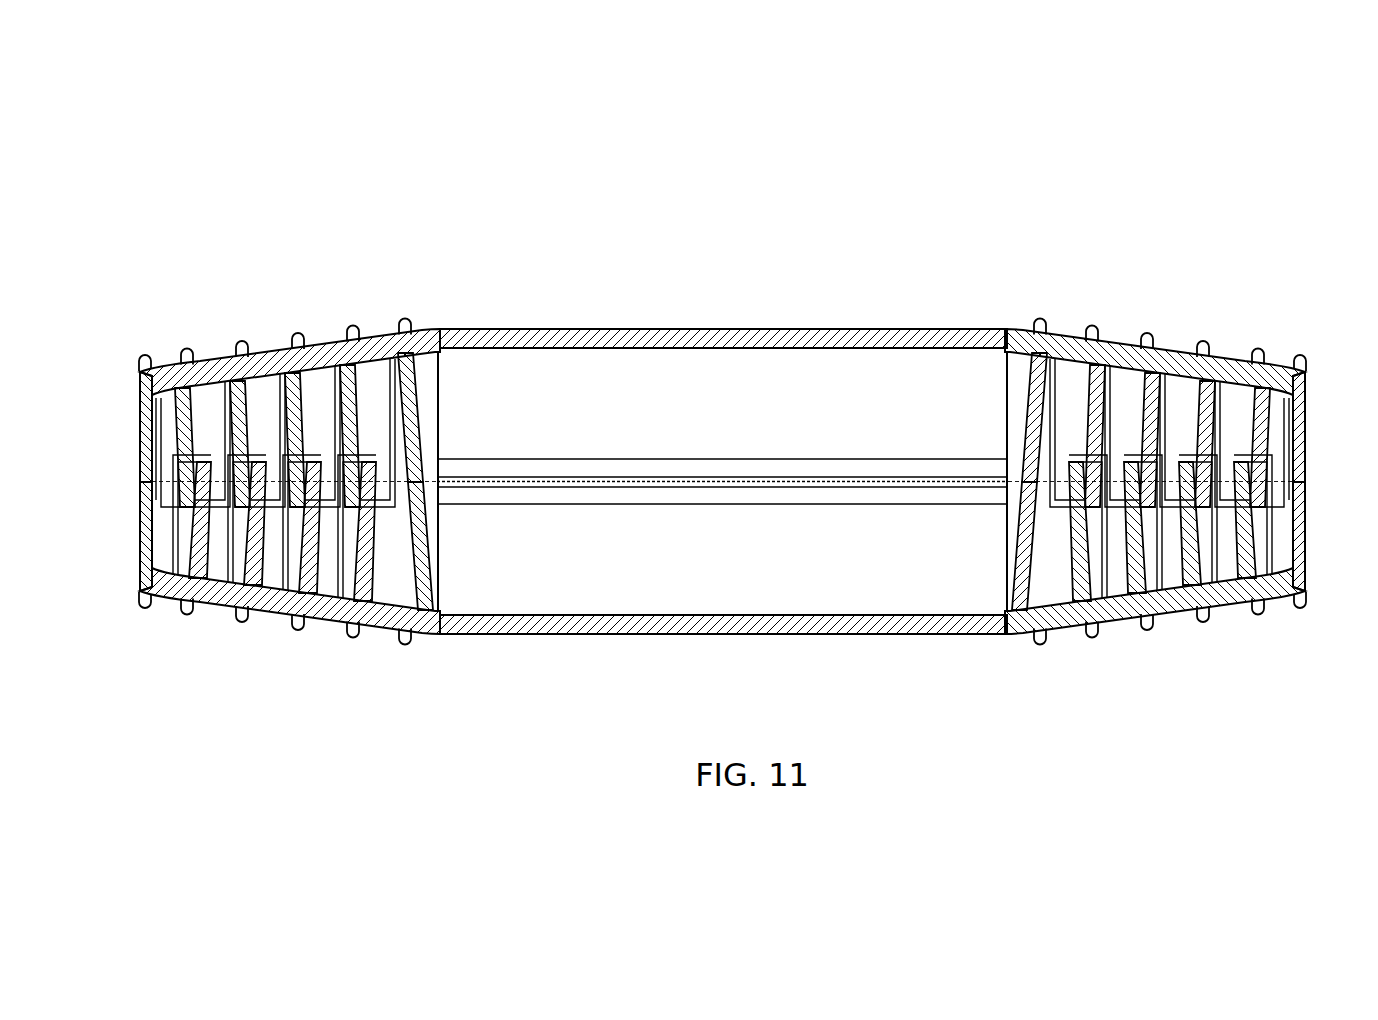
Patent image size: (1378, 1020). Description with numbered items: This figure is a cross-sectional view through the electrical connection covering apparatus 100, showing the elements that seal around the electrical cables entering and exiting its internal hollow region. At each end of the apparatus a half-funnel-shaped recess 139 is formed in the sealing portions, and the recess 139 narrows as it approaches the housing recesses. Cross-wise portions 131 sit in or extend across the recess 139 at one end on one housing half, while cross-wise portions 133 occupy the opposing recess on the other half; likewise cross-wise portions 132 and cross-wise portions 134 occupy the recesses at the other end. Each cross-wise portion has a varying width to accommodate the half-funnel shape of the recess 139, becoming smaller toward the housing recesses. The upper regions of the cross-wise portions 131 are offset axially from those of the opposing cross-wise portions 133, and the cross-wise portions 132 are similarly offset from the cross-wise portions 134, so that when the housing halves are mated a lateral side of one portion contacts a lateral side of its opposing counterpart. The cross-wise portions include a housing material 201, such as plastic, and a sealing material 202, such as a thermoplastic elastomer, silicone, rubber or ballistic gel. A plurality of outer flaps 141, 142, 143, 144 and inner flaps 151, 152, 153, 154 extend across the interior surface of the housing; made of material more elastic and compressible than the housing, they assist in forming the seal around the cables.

The electrical connection covering apparatus 100 is at (721, 170).
The cross-wise portion 131 is at (346, 302).
The cross-wise portion 132 is at (1100, 312).
The cross-wise portion 133 is at (376, 660).
The cross-wise portion 134 is at (1107, 655).
The recess 139 is at (453, 330).
The outer flap 141 is at (140, 458).
The outer flap 142 is at (1300, 443).
The outer flap 143 is at (148, 527).
The outer flap 144 is at (1285, 528).
The inner flap 151 is at (418, 435).
The inner flap 152 is at (1025, 450).
The inner flap 153 is at (425, 590).
The inner flap 154 is at (1030, 540).
The housing material 201 is at (327, 360).
The sealing material 202 is at (138, 363).